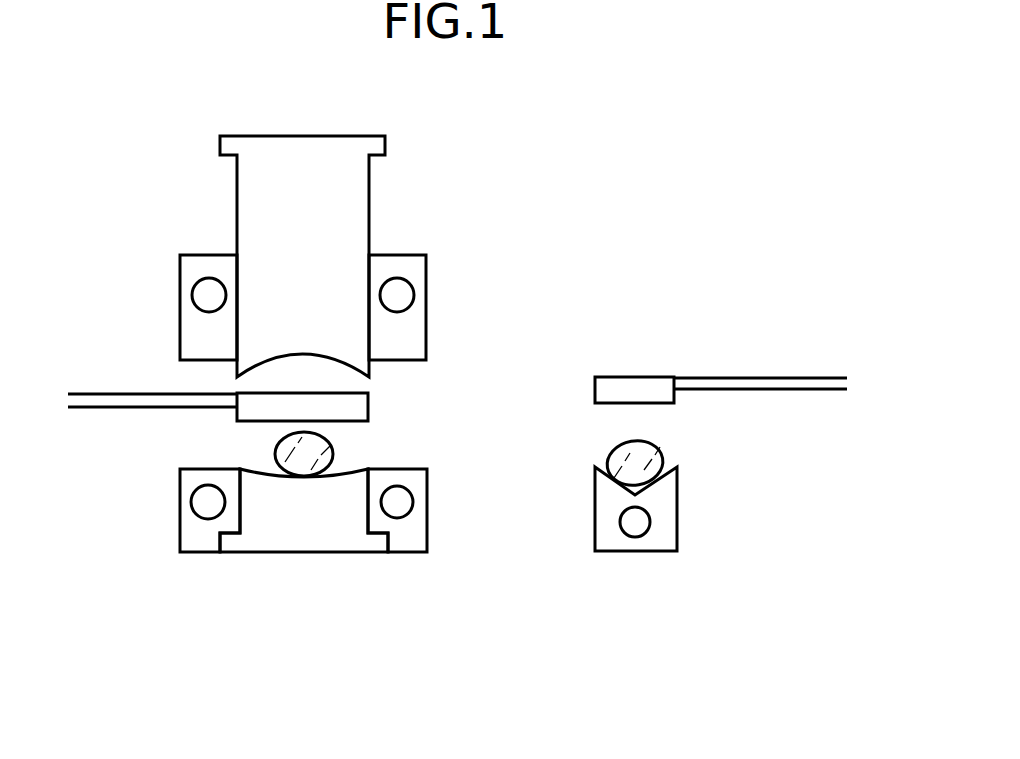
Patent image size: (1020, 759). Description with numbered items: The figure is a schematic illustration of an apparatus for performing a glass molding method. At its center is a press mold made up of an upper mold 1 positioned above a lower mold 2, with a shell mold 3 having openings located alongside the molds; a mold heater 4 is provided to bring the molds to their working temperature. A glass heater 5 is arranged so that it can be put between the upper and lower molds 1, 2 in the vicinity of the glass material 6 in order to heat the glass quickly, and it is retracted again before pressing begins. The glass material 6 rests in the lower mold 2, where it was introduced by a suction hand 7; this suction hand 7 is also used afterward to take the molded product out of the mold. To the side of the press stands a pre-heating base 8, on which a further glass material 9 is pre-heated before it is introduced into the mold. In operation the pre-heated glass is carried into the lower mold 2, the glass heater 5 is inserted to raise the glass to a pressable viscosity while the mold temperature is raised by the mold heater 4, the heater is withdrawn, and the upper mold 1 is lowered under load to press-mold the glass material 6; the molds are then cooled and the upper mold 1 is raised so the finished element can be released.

The upper mold 1 is at (357, 204).
The lower mold 2 is at (308, 543).
The shell mold 3 is at (415, 332).
The mold heater 4 is at (403, 291).
The glass heater 5 is at (358, 403).
The glass material 6 is at (333, 450).
The suction hand 7 is at (632, 388).
The pre-heating base 8 is at (662, 503).
The glass material 9 is at (658, 455).